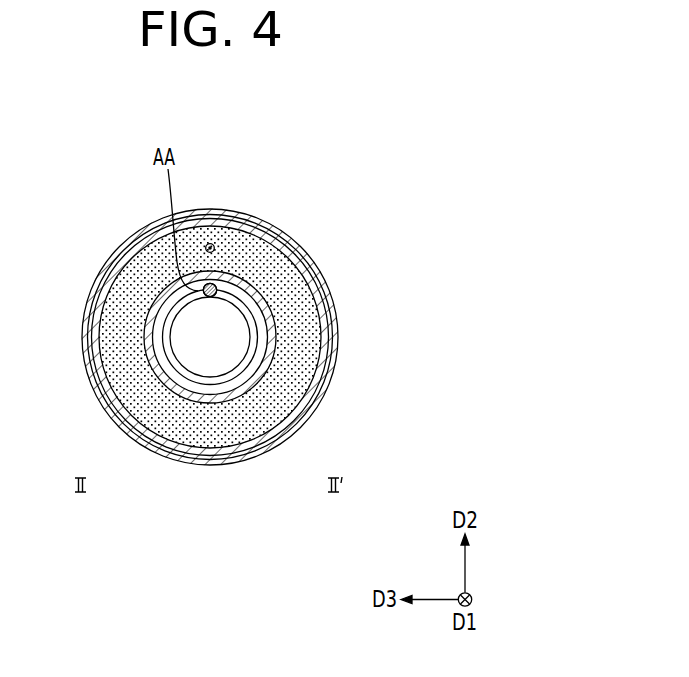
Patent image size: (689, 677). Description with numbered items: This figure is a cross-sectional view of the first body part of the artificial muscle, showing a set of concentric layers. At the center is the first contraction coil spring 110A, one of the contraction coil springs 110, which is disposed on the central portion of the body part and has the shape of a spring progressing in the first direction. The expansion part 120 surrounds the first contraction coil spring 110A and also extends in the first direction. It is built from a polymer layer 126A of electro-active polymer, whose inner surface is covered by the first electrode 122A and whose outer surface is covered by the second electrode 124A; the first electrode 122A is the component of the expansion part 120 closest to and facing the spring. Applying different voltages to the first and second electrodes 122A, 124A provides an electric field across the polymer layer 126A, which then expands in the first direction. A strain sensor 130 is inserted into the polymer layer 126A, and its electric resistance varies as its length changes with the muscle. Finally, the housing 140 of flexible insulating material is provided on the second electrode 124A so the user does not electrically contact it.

The contraction coil spring 110 is at (257, 337).
The first contraction coil spring 110A is at (329, 337).
The expansion part 120 is at (286, 337).
The first electrode 122A is at (270, 305).
The second electrode 124A is at (303, 249).
The polymer layer 126A is at (283, 280).
The strain sensor 130 is at (210, 243).
The housing 140 is at (331, 363).